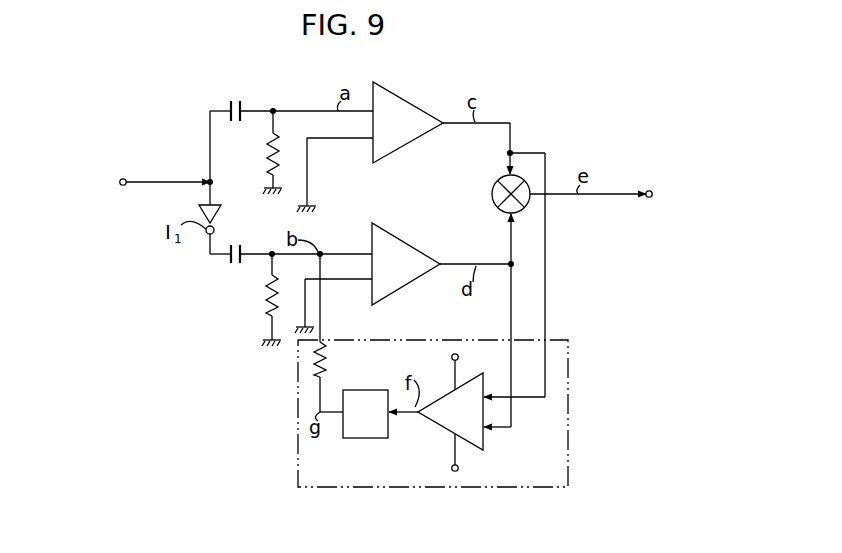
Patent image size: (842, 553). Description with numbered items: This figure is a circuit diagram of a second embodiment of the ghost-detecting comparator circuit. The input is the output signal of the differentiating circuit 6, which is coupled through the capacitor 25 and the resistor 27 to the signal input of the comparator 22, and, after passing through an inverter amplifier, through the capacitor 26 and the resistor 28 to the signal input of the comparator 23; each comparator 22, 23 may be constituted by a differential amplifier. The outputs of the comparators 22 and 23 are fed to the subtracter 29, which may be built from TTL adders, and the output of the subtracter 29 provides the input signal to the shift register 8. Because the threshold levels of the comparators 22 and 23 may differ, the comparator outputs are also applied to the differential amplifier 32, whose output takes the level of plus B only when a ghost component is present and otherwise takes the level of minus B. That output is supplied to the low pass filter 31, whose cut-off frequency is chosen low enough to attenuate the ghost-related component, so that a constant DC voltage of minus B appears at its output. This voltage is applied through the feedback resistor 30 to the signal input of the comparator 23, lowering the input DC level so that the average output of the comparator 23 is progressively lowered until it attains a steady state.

The differentiator output 6 is at (129, 180).
The shift register 8 is at (635, 195).
The comparator 22 is at (405, 97).
The comparator 23 is at (413, 245).
The capacitor 25 is at (232, 100).
The capacitor 26 is at (232, 265).
The resistor 27 is at (268, 162).
The resistor 28 is at (267, 291).
The subtracter 29 is at (492, 190).
The resistor 30 is at (318, 376).
The low pass filter 31 is at (360, 438).
The differential amplifier 32 is at (437, 423).